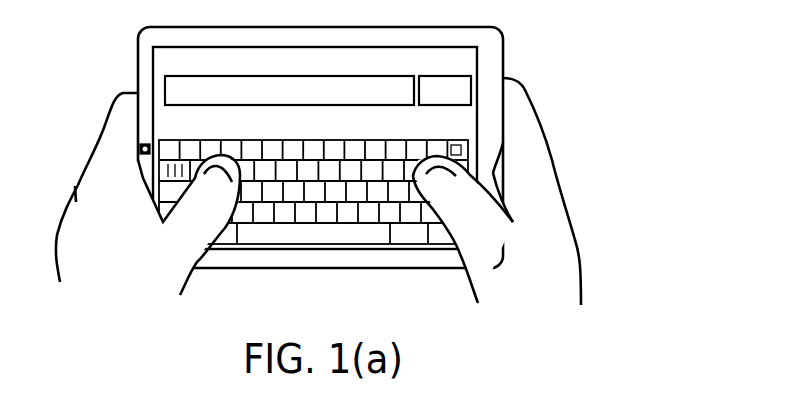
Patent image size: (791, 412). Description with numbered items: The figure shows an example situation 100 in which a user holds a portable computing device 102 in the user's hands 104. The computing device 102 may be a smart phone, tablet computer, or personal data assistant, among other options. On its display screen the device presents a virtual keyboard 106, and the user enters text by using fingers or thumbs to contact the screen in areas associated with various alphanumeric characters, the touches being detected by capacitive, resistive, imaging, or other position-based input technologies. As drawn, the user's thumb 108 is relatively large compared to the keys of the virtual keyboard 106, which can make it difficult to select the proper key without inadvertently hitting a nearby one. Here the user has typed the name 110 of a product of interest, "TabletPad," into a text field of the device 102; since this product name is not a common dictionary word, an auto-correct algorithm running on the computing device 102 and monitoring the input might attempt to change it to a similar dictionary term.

The example situation 100 is at (637, 104).
The portable computing device 102 is at (138, 63).
The user's hands 104 is at (580, 258).
The virtual keyboard 106 is at (331, 262).
The right thumb 108 is at (437, 185).
The name of a product 110 is at (266, 90).